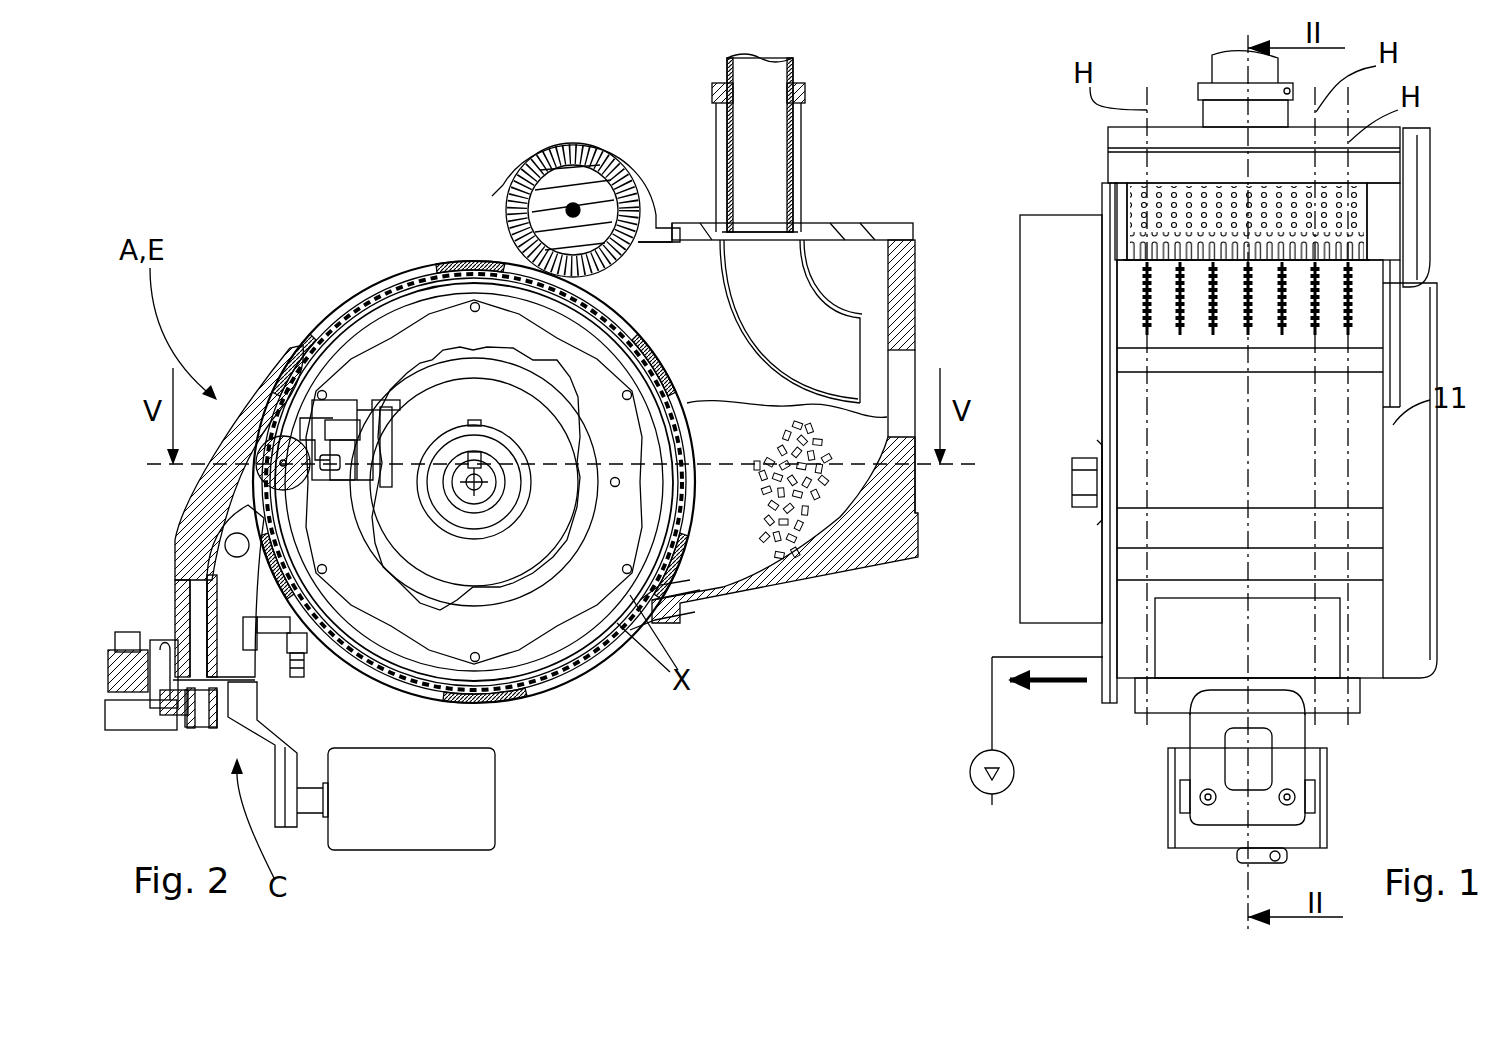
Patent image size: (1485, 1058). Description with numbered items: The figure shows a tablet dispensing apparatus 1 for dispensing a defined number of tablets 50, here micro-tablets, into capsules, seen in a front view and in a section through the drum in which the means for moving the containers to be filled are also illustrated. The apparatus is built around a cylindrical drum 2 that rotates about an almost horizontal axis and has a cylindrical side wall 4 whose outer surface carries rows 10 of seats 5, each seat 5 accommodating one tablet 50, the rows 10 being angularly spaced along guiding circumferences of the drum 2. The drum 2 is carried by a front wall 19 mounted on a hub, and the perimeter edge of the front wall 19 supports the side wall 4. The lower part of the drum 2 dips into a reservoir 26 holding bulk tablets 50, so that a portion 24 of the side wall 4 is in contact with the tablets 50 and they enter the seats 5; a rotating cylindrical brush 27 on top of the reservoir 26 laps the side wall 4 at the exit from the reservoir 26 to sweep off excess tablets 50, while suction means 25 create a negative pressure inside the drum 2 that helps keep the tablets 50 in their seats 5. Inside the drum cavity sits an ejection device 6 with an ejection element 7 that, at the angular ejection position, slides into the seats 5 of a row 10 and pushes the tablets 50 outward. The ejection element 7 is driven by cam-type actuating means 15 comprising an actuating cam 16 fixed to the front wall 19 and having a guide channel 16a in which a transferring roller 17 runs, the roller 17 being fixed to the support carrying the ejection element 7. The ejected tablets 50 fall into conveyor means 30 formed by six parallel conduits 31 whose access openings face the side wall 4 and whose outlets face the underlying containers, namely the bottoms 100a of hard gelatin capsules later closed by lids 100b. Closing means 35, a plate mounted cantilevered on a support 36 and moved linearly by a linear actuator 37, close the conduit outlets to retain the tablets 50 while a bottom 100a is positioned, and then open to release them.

In FIG. 2, the tablet dispensing apparatus 1 is at (272, 188).
In FIG. 2, the cylindrical drum 2 is at (440, 240).
In FIG. 1, the cylindrical drum 2 is at (1096, 378).
In FIG. 2, the side wall 4 is at (480, 262).
In FIG. 1, the side wall 4 is at (1125, 293).
In FIG. 2, the seats 5 is at (387, 277).
In FIG. 1, the seats 5 is at (1350, 287).
In FIG. 2, the ejection device 6 is at (345, 519).
In FIG. 2, the ejection element 7 is at (248, 410).
In FIG. 2, the rows of seats 10 is at (296, 318).
In FIG. 1, the rows of seats 10 is at (1350, 358).
In FIG. 2, the actuating means 15 is at (357, 372).
In FIG. 2, the actuating cam 16 is at (473, 662).
In FIG. 2, the guide channel 16a is at (474, 483).
In FIG. 2, the transferring roller 17 is at (341, 520).
In FIG. 2, the front wall 19 is at (632, 626).
In FIG. 1, the front wall 19 is at (1105, 412).
In FIG. 2, the portion of the side wall 24 is at (708, 568).
In FIG. 1, the suction means 25 is at (970, 777).
In FIG. 2, the reservoir 26 is at (780, 328).
In FIG. 2, the rotating cylindrical brush 27 is at (648, 165).
In FIG. 1, the rotating cylindrical brush 27 is at (1362, 230).
In FIG. 2, the conveyor means 30 is at (175, 535).
In FIG. 1, the conveyor means 30 is at (1160, 495).
In FIG. 2, the conduits 31 is at (177, 607).
In FIG. 1, the closing means 35 is at (1322, 680).
In FIG. 2, the support 36 is at (287, 770).
In FIG. 1, the support 36 is at (1202, 735).
In FIG. 2, the linear actuator 37 is at (385, 783).
In FIG. 1, the linear actuator 37 is at (1307, 842).
In FIG. 2, the tablets 50 is at (803, 512).
In FIG. 2, the bottom 100a is at (202, 728).
In FIG. 2, the lid 100b is at (153, 650).